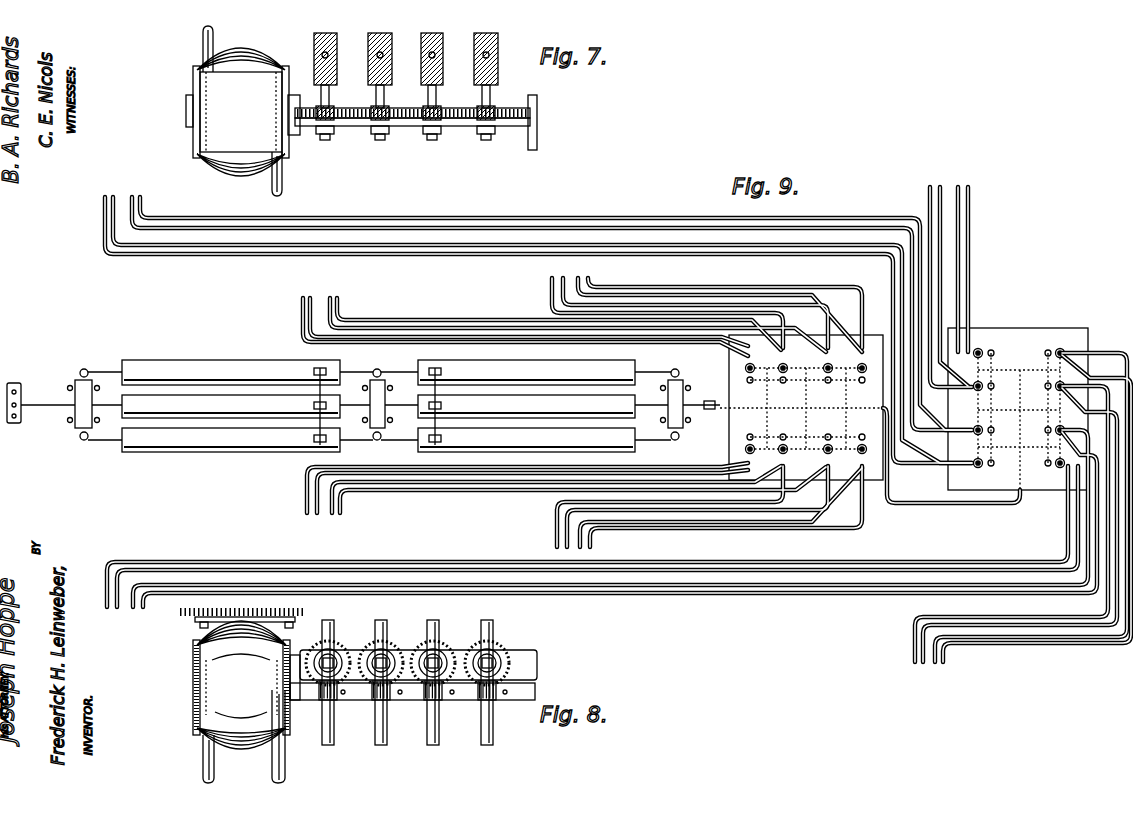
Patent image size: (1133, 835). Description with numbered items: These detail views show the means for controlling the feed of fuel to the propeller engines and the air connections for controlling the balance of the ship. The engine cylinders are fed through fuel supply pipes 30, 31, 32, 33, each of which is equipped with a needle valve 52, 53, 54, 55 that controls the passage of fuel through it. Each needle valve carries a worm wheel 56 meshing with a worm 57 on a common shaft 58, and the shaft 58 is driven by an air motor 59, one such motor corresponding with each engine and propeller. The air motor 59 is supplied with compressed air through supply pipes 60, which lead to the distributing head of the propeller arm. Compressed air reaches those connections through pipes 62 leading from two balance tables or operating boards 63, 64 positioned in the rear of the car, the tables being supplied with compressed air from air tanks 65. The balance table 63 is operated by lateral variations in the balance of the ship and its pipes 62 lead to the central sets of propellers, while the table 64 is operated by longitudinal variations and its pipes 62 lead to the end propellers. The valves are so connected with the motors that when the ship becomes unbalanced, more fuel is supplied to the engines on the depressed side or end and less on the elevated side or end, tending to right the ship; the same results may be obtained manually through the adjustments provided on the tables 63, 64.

In FIG. 8, the fuel supply pipe 30 is at (493, 630).
In FIG. 8, the fuel supply pipe 31 is at (429, 624).
In FIG. 8, the fuel supply pipe 32 is at (378, 624).
In FIG. 8, the fuel supply pipe 33 is at (322, 634).
In FIG. 7, the needle valve 52 is at (498, 46).
In FIG. 7, the needle valve 53 is at (443, 45).
In FIG. 7, the needle valve 54 is at (392, 46).
In FIG. 7, the needle valve 55 is at (337, 46).
In FIG. 7, the worm wheel 56 is at (334, 136).
In FIG. 8, the worm wheel 56 is at (345, 648).
In FIG. 7, the worm 57 is at (330, 110).
In FIG. 8, the worm 57 is at (340, 700).
In FIG. 7, the shaft 58 is at (298, 106).
In FIG. 8, the shaft 58 is at (303, 700).
In FIG. 7, the air motor 59 is at (240, 52).
In FIG. 8, the air motor 59 is at (242, 680).
In FIG. 7, the air supply pipe 60 is at (203, 44).
In FIG. 8, the air supply pipe 60 is at (272, 771).
In FIG. 9, the air supply pipe 62 is at (144, 194).
In FIG. 9, the balance table 63 is at (728, 374).
In FIG. 9, the balance table 64 is at (1023, 335).
In FIG. 9, the air tank 65 is at (363, 406).